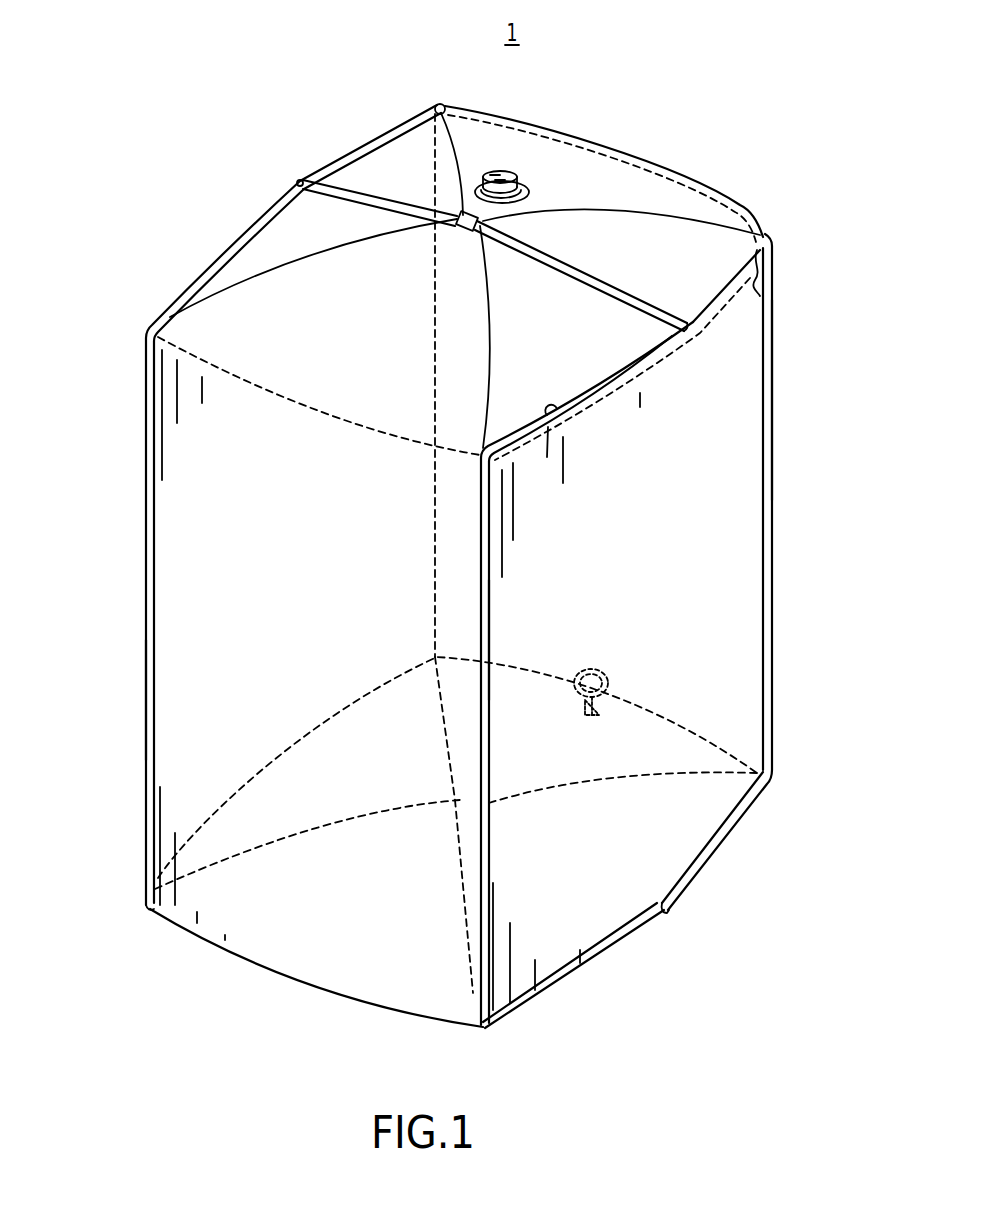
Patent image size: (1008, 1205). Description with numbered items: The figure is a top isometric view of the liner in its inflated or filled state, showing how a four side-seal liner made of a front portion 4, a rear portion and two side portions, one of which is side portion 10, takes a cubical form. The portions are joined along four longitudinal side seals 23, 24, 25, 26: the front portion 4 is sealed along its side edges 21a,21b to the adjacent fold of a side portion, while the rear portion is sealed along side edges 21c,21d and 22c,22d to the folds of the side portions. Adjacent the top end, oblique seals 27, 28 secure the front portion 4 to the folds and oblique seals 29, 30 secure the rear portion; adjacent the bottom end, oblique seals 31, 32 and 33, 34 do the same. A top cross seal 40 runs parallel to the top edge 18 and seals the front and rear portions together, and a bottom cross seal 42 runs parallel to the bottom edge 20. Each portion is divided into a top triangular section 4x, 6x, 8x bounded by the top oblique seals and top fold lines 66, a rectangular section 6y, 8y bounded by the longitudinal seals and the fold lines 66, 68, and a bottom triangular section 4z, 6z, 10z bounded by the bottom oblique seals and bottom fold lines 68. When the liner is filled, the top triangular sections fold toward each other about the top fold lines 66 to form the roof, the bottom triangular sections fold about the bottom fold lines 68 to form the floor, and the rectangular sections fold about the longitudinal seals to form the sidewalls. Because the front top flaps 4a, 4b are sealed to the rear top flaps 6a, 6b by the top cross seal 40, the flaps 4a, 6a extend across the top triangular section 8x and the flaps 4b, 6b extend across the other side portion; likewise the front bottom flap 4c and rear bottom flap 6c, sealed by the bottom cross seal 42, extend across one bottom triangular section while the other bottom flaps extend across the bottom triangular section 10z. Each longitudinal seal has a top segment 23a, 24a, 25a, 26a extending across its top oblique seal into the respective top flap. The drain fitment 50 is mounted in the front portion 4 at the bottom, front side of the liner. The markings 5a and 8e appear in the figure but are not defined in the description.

The front portion 4 is at (718, 553).
The front top flap 4a is at (699, 250).
The front top flap 4b is at (429, 191).
The front bottom flap 4c is at (723, 837).
The top triangular section 4x is at (544, 163).
The bottom triangular section 4z is at (507, 757).
The fill fitment 5a is at (532, 186).
The rear top flap 6a is at (531, 281).
The rear top flap 6b is at (346, 231).
The rear bottom flap 6c is at (603, 960).
The top triangular section 6x is at (376, 335).
The rectangular section 6y is at (304, 566).
The bottom triangular section 6z is at (377, 893).
The top triangular section 8x is at (637, 375).
The rectangular section 8y is at (654, 566).
The bottom panel region 8e is at (523, 880).
The side portion 10 is at (200, 558).
The bottom triangular section 10z is at (290, 805).
The top edge 18 is at (367, 188).
The bottom edge 20 is at (668, 913).
The side edges 21a,21b is at (775, 398).
The side edges 21c,21d is at (490, 600).
The side edges 22c,22d is at (147, 700).
The longitudinal side seal 23 is at (762, 412).
The top segment 23a is at (775, 293).
The longitudinal side seal 24 is at (420, 606).
The top segment 24a is at (422, 113).
The longitudinal side seal 25 is at (156, 660).
The top segment 25a is at (180, 292).
The longitudinal side seal 26 is at (480, 575).
The top segment 26a is at (538, 444).
The top oblique seal 27 is at (666, 205).
The top oblique seal 28 is at (460, 156).
The top oblique seal 29 is at (273, 270).
The top oblique seal 30 is at (493, 313).
The bottom oblique seal 31 is at (641, 791).
The bottom oblique seal 32 is at (432, 716).
The bottom oblique seal 33 is at (237, 880).
The bottom oblique seal 34 is at (456, 872).
The top cross seal 40 is at (388, 210).
The bottom cross seal 42 is at (450, 820).
The drain fitment 50 is at (600, 715).
The top fold line 66 is at (648, 160).
The bottom fold line 68 is at (313, 988).